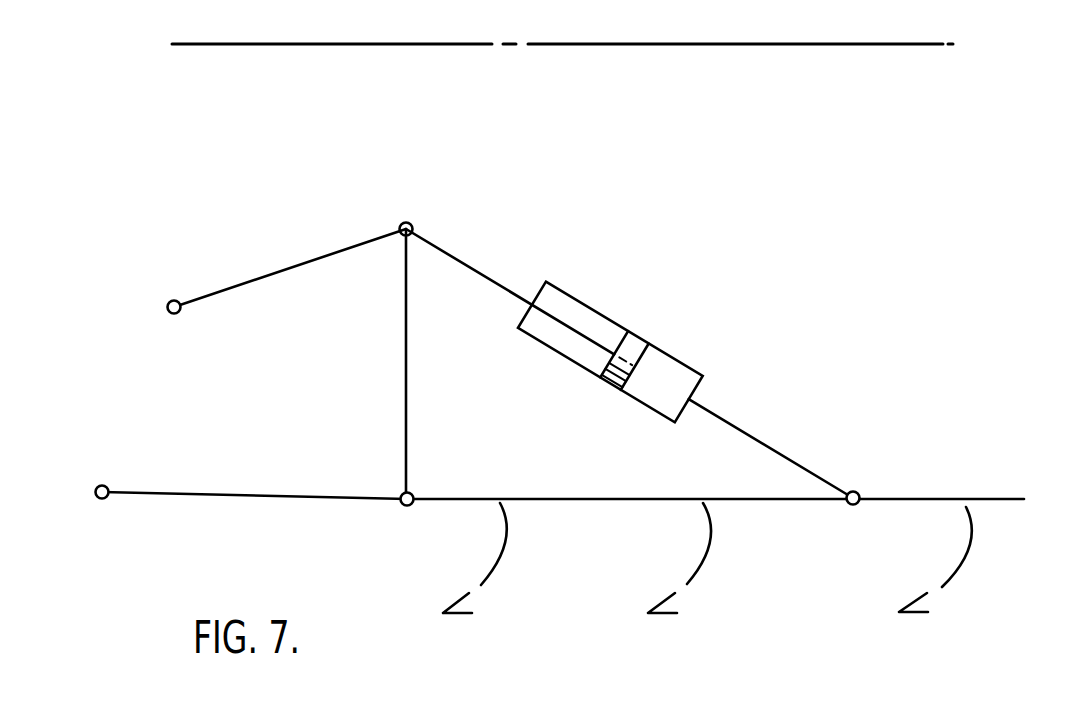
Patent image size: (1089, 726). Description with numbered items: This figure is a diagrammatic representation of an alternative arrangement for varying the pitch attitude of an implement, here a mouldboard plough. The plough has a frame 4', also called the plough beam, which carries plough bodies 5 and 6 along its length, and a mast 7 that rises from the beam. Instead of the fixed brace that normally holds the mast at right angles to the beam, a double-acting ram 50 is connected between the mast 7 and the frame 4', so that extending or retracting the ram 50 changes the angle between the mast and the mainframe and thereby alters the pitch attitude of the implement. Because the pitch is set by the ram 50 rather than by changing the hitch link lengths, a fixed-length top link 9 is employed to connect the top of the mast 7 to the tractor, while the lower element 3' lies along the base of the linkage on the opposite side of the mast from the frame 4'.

The top link 9 is at (243, 283).
The mast 7 is at (409, 339).
The left base link 3' is at (252, 467).
The frame 4' is at (715, 468).
The double-acting ram 50 is at (672, 376).
The plough body 5 is at (713, 550).
The plough body 6 is at (965, 555).